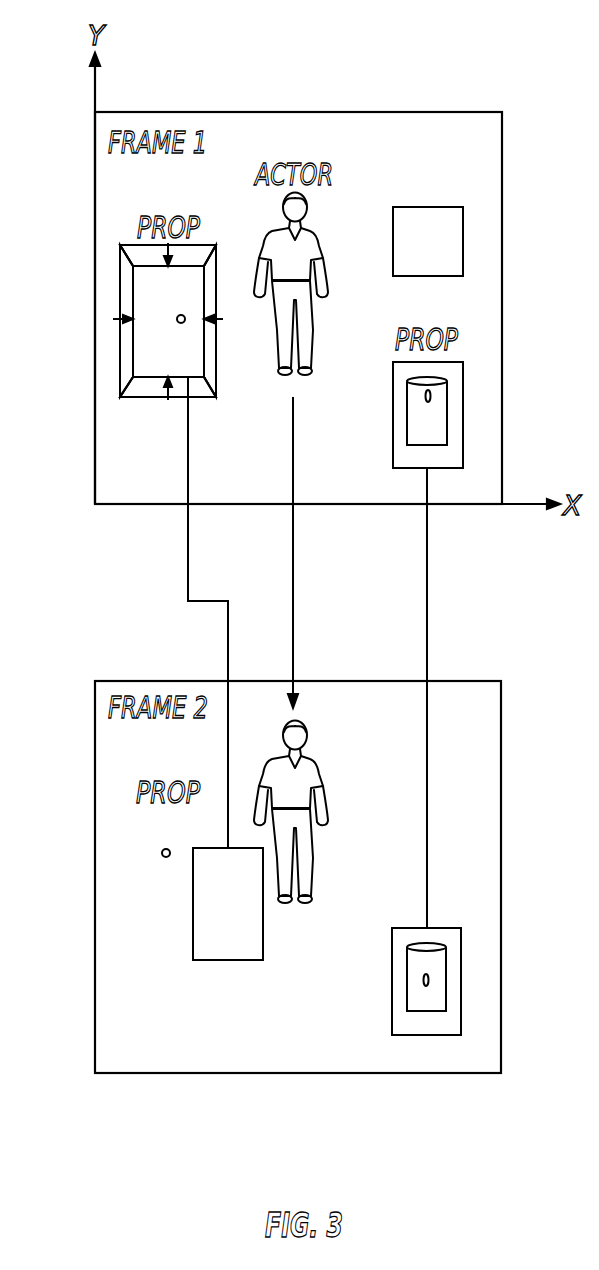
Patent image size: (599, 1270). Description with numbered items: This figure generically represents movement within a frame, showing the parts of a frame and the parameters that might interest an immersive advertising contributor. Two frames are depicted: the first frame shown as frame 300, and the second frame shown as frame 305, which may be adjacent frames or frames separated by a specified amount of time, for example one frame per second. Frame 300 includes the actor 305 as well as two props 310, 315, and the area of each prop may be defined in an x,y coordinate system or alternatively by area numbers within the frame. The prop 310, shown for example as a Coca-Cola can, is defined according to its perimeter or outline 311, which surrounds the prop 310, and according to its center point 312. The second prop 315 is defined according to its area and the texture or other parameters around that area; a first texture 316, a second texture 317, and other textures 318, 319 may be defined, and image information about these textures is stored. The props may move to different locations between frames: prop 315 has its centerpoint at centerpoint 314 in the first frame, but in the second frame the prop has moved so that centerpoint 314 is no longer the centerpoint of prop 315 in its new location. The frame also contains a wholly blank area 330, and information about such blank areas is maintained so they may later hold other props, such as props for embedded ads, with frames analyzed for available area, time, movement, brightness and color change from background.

The frame 1 300 is at (477, 112).
The actor / frame 2 305 is at (308, 213).
The prop 310 is at (448, 401).
The perimeter / outline of prop 311 is at (463, 424).
The center point of prop 312 is at (424, 396).
The centerpoint of prop 315 314 is at (176, 320).
The second prop 315 is at (138, 283).
The first texture 316 is at (193, 252).
The second texture 317 is at (216, 296).
The texture 318 is at (218, 373).
The texture 319 is at (133, 398).
The blank area 330 is at (463, 228).